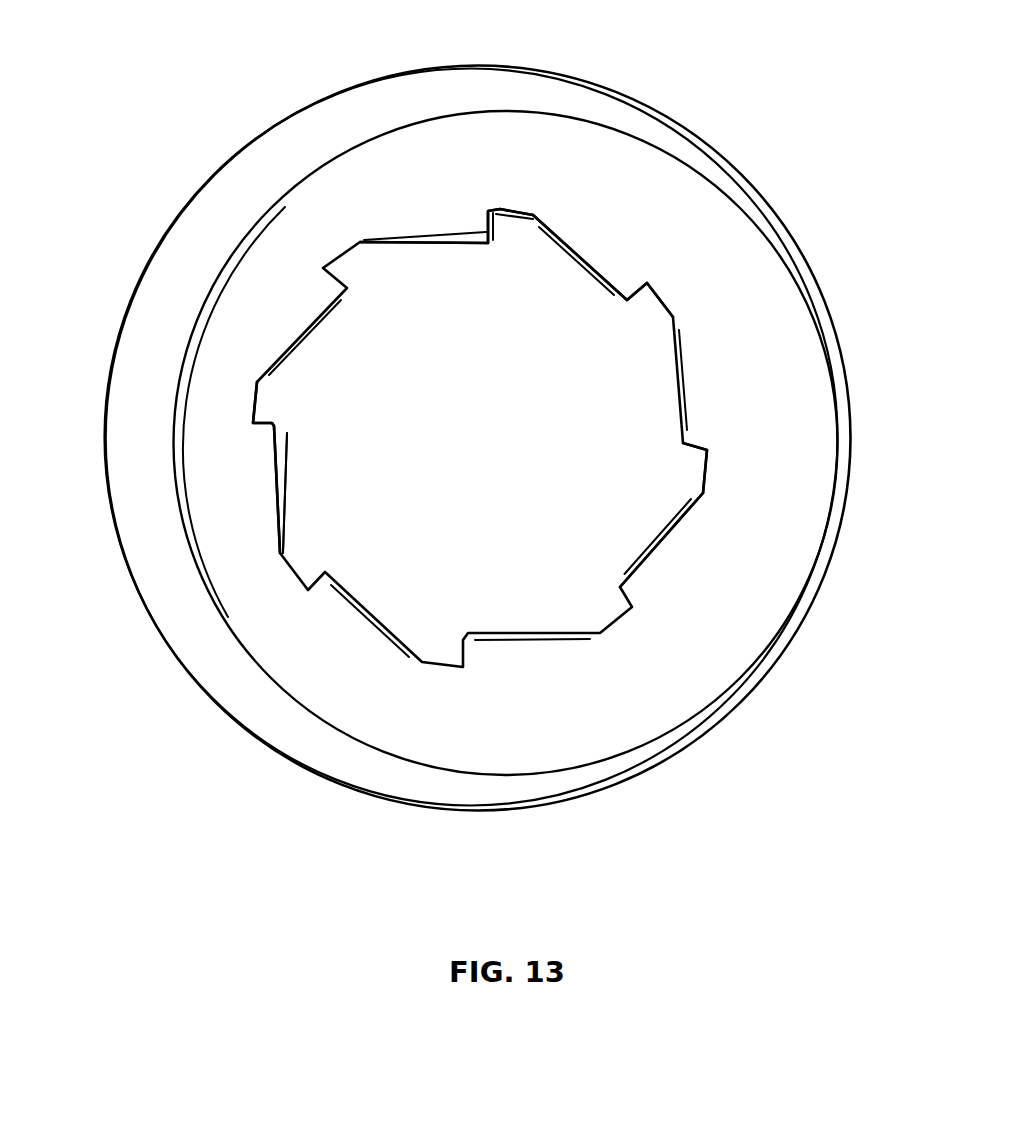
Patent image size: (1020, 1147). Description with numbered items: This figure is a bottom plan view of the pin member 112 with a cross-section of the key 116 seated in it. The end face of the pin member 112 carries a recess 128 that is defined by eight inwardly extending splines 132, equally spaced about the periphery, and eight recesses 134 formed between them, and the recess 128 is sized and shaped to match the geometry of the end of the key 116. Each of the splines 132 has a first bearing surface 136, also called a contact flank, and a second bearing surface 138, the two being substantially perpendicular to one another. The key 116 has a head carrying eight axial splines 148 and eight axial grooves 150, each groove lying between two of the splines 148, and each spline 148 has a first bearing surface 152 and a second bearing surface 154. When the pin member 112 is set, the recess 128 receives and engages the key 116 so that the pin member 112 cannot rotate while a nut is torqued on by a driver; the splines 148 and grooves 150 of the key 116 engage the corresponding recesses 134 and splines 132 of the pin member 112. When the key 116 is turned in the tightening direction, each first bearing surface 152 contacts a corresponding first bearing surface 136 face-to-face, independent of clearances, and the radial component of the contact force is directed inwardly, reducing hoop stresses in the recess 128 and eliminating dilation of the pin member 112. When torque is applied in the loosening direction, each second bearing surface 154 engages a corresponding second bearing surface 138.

The pin member 112 is at (272, 282).
The key 116 is at (558, 395).
The recess 128 is at (259, 453).
The splines 132 is at (393, 213).
The recesses 134 is at (329, 238).
The first bearing surface 136 is at (503, 211).
The second bearing surface 138 is at (687, 518).
The splines 148 is at (540, 257).
The grooves 150 is at (610, 287).
The first bearing surface 152 is at (483, 230).
The second bearing surface 154 is at (635, 563).